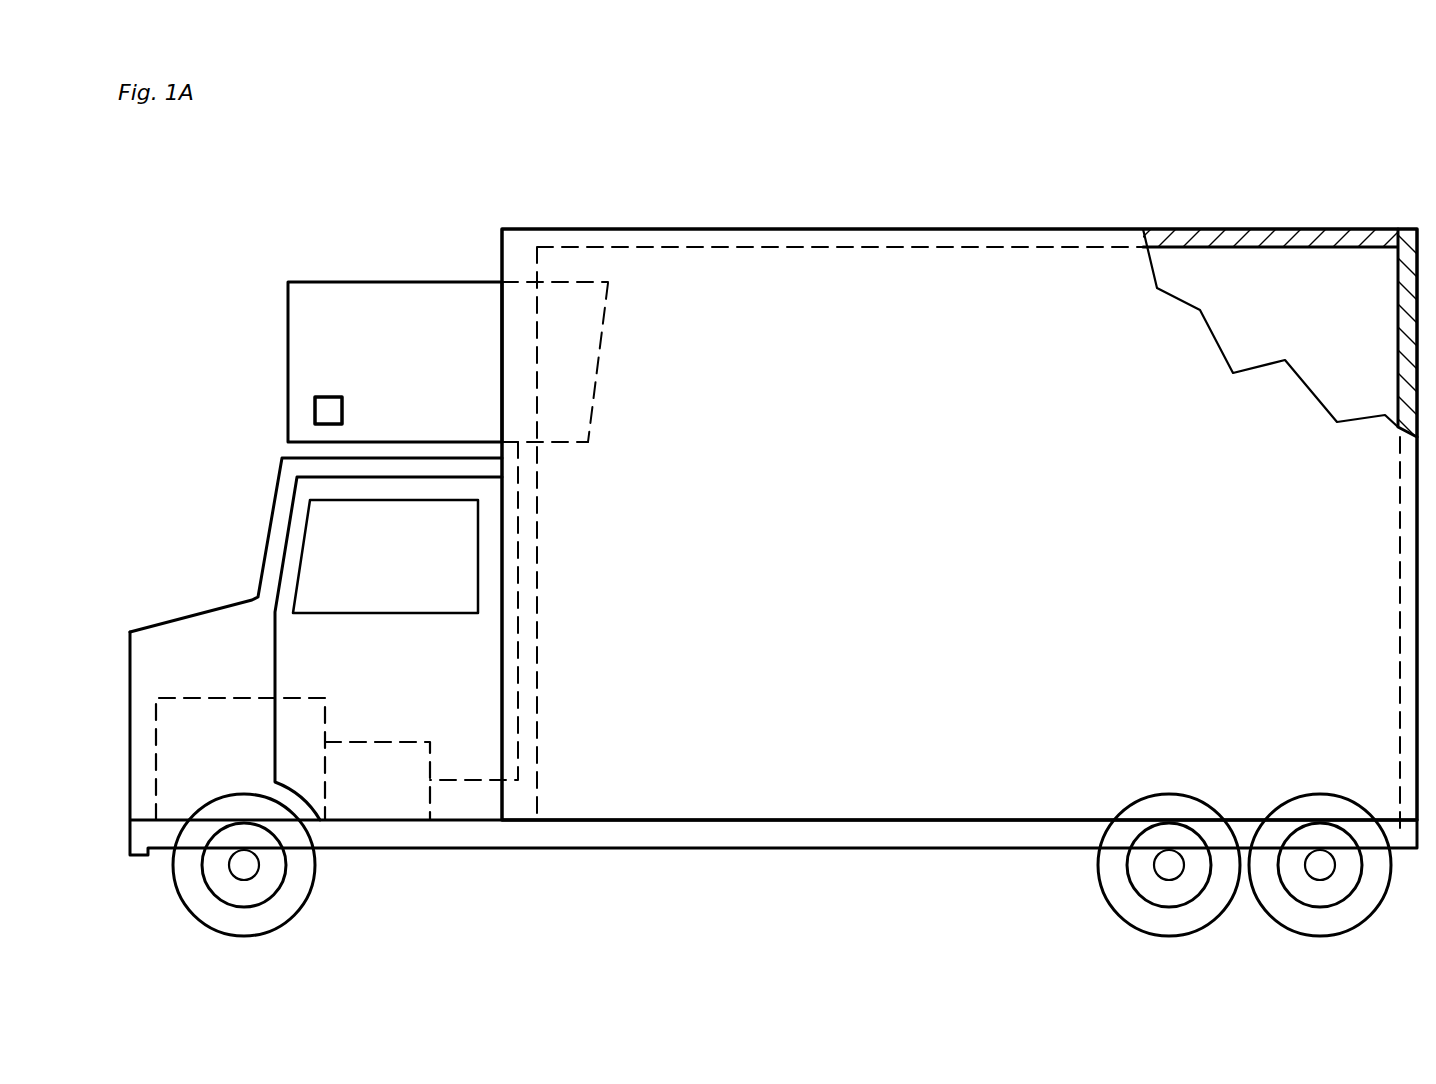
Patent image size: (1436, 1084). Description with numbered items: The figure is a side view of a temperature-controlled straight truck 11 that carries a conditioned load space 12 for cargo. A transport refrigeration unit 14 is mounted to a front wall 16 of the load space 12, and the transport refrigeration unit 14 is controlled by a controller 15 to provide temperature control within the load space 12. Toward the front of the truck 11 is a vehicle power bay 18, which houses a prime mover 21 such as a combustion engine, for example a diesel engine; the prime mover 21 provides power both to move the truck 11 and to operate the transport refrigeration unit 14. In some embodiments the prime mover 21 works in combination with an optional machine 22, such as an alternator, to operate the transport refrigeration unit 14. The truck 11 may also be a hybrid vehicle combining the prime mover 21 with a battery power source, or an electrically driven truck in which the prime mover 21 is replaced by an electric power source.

The temperature-controlled straight truck 11 is at (1024, 191).
The conditioned load space 12 is at (1227, 280).
The transport refrigeration unit 14 is at (368, 282).
The controller 15 is at (313, 407).
The front wall 16 is at (537, 303).
The vehicle power bay 18 is at (223, 605).
The prime mover 21 is at (185, 697).
The machine 22 is at (400, 742).